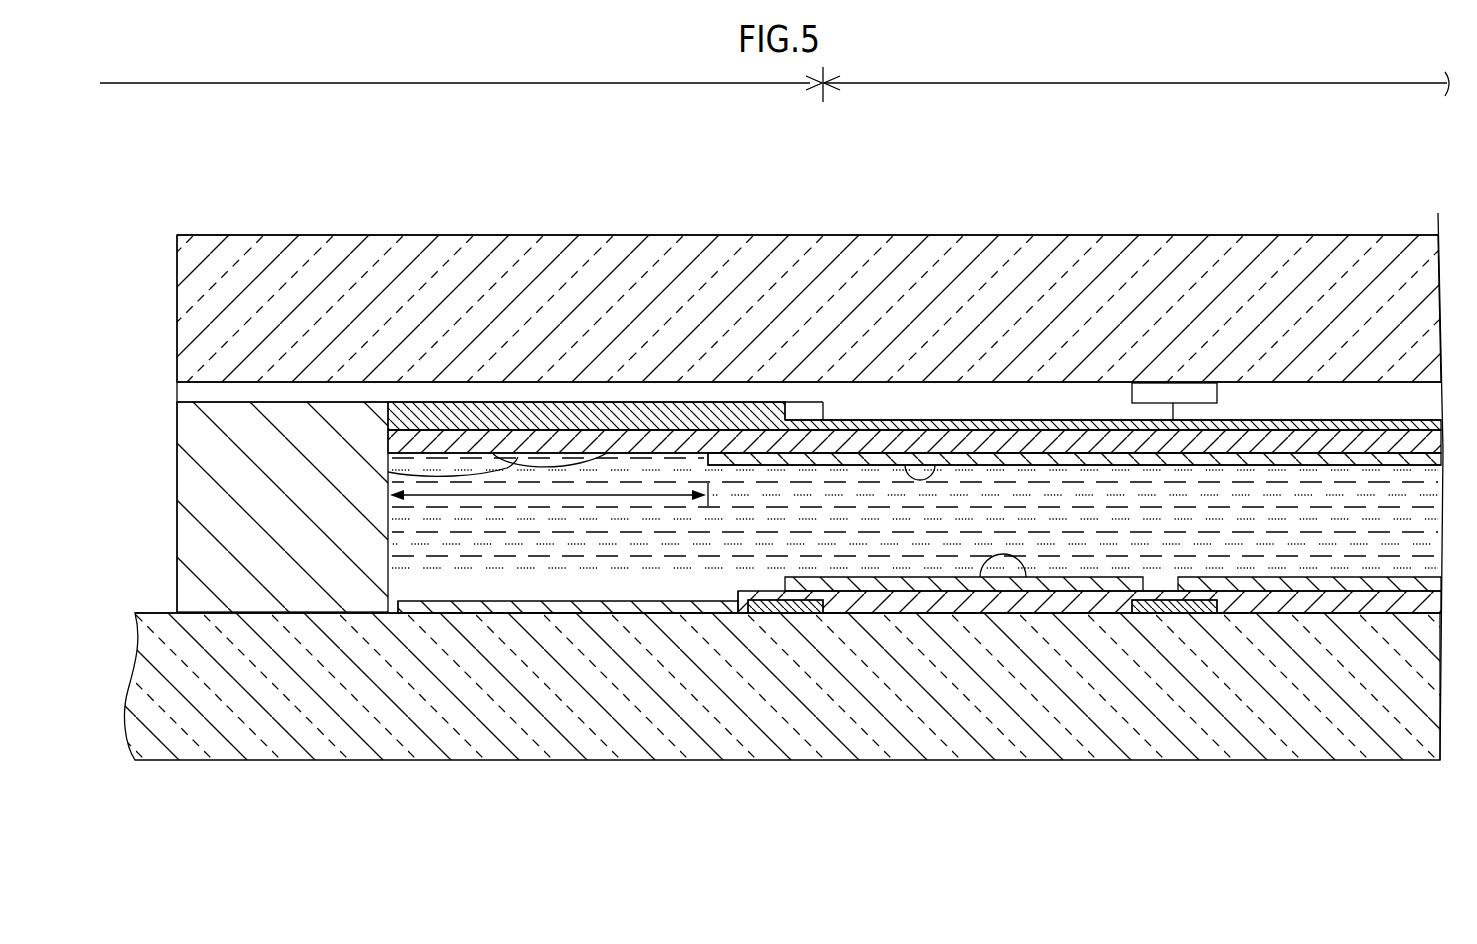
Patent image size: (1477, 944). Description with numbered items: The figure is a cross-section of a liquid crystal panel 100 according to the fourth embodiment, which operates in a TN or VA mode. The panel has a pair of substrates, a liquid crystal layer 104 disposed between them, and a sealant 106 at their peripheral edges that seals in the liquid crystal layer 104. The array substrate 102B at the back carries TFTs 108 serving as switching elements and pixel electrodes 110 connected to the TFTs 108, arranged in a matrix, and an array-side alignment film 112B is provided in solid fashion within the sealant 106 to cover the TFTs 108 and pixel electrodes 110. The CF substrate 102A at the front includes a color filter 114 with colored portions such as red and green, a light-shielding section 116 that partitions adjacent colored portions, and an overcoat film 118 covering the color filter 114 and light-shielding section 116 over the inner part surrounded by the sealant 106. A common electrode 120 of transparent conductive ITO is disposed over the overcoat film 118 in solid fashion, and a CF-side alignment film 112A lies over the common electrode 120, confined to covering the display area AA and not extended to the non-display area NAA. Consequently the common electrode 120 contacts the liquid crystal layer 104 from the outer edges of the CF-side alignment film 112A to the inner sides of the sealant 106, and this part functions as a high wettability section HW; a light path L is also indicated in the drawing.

The liquid crystal panel 100 is at (122, 276).
The CF substrate 102A is at (283, 272).
The array substrate 102B is at (193, 735).
The liquid crystal layer 104 is at (1353, 546).
The sealant 106 is at (213, 513).
The TFT 108 is at (786, 606).
The pixel electrode 110 is at (912, 600).
The CF-side alignment film 112A is at (935, 467).
The array-side alignment film 112B is at (1022, 566).
The color filter 114 is at (1096, 390).
The light-shielding section 116 is at (612, 402).
The overcoat film 118 is at (855, 400).
The common electrode 120 is at (716, 418).
The light L is at (388, 472).
The high wettability section HW is at (549, 507).
The non-display area NAA is at (461, 78).
The display area AA is at (1136, 75).